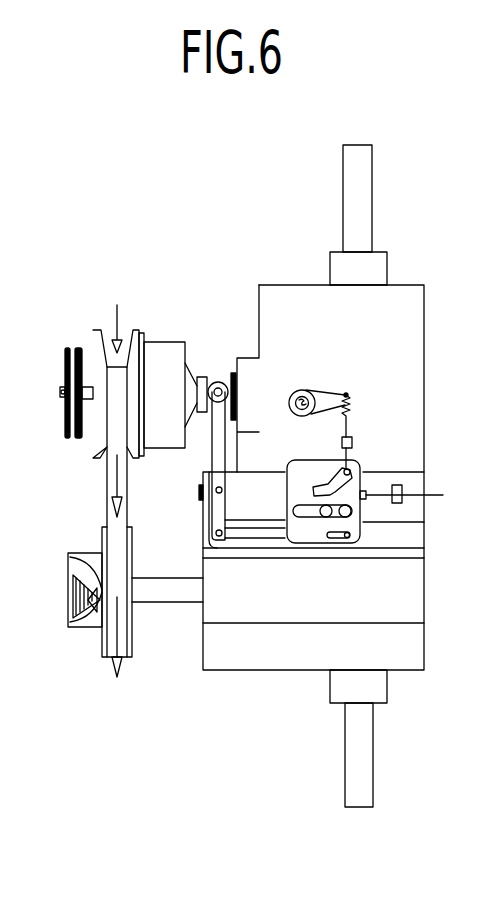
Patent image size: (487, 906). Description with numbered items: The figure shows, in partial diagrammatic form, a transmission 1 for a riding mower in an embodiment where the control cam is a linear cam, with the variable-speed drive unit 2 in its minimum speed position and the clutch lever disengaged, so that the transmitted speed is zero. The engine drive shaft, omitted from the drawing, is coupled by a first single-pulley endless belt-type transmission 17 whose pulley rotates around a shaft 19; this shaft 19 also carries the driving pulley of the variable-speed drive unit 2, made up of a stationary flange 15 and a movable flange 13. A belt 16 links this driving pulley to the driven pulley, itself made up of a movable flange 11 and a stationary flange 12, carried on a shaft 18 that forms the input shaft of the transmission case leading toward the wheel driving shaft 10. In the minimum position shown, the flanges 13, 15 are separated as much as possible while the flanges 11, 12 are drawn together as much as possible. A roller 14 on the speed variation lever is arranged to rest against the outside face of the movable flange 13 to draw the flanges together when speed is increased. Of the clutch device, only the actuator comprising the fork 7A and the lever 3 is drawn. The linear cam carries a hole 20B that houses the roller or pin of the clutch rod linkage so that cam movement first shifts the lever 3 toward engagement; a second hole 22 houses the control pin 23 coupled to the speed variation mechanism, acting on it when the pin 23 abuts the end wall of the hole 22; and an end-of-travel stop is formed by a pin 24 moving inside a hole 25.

The transmission 1 is at (413, 248).
The variable-speed drive unit 2 is at (97, 495).
The lever 3 is at (350, 396).
The fork 7A is at (317, 390).
The wheel driving shaft 10 is at (358, 145).
The movable flange 11 is at (106, 658).
The stationary flange 12 is at (132, 661).
The movable flange 13 is at (135, 328).
The roller 14 is at (218, 382).
The stationary flange 15 is at (98, 330).
The belt 16 is at (112, 661).
The single-pulley endless belt-type transmission 17 is at (66, 348).
The shaft 18 is at (167, 603).
The shaft 19 is at (62, 398).
The hole 20B is at (361, 481).
The hole 22 is at (349, 541).
The control pin 23 is at (361, 533).
The pin 24 is at (323, 520).
The hole 25 is at (299, 518).